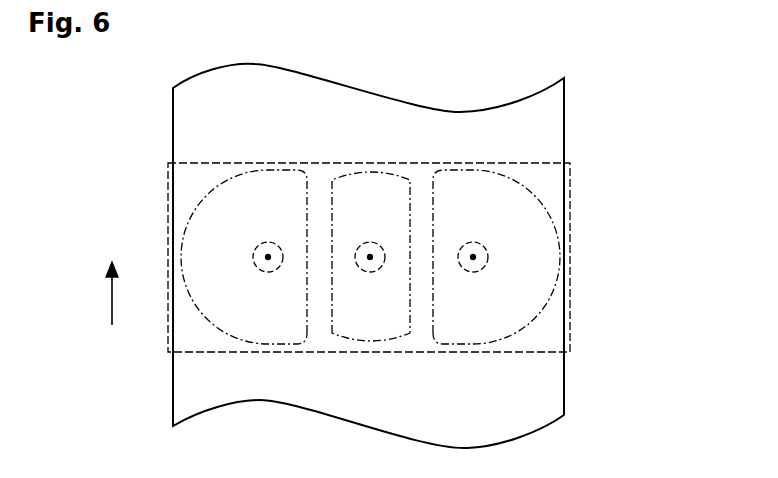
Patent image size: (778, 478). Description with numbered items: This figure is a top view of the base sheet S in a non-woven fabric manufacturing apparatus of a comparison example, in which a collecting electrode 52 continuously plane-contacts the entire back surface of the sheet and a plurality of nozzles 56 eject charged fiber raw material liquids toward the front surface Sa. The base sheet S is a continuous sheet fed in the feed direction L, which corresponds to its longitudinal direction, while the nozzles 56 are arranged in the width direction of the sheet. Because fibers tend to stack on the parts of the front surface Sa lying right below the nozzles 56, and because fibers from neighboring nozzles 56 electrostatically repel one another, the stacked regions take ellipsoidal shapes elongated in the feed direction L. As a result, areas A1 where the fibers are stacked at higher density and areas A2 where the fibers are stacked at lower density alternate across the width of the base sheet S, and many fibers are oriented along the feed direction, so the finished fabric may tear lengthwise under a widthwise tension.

The base sheet S is at (564, 142).
The collecting electrode 52 is at (570, 228).
The areas on which the fibers are higher densely stacked A1 is at (248, 182).
The areas on which the fibers are lower densely stacked A2 is at (317, 182).
The nozzles 56 is at (270, 242).
The front surface Sa is at (363, 390).
The feed direction L is at (110, 300).